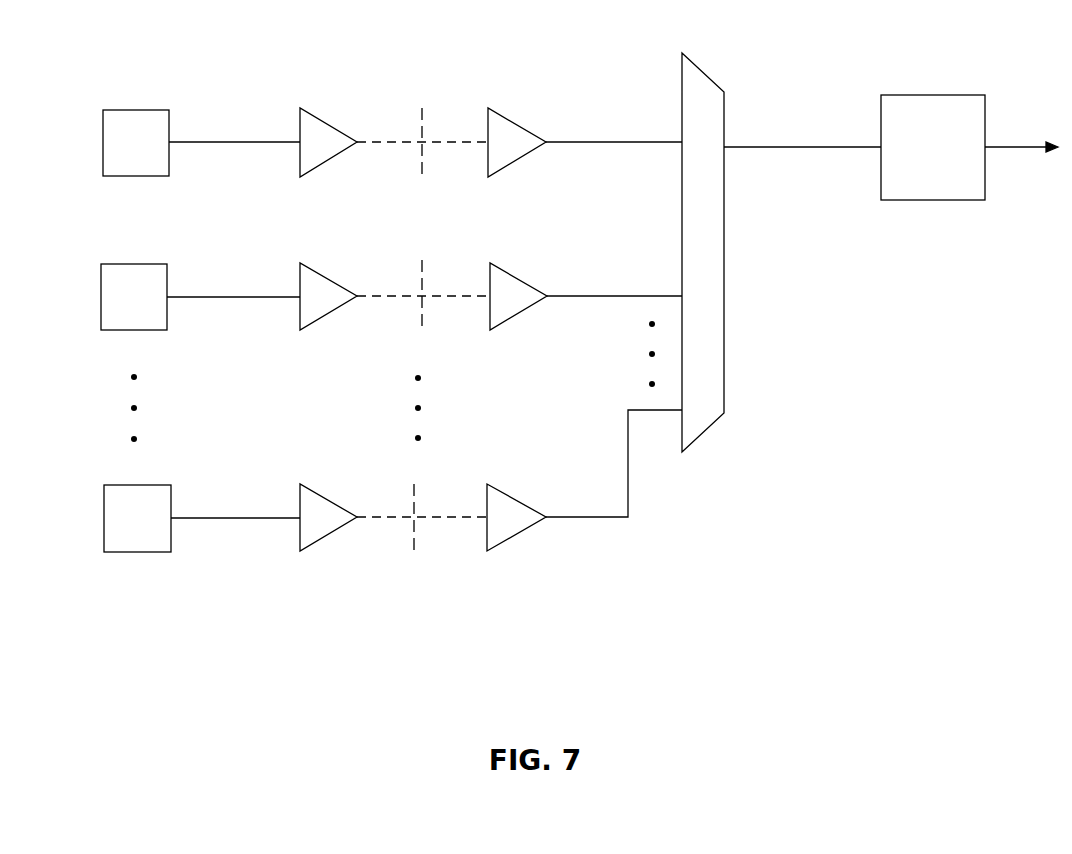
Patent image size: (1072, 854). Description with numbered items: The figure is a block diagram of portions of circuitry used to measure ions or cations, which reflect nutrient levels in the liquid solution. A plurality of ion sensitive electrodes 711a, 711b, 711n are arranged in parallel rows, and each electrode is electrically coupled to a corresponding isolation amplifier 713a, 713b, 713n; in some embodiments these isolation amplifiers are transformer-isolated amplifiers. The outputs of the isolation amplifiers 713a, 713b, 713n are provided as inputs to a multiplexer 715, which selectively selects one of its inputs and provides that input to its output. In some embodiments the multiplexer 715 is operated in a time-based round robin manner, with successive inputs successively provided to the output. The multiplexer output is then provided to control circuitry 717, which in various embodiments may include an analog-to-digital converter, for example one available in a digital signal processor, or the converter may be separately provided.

The ion sensitive electrode 711a is at (103, 142).
The ion sensitive electrode 711b is at (101, 296).
The ion sensitive electrode 711n is at (106, 516).
The isolation amplifier 713a is at (497, 70).
The isolation amplifier 713b is at (489, 233).
The isolation amplifier 713n is at (491, 449).
The multiplexer 715 is at (703, 73).
The control circuitry 717 is at (935, 95).